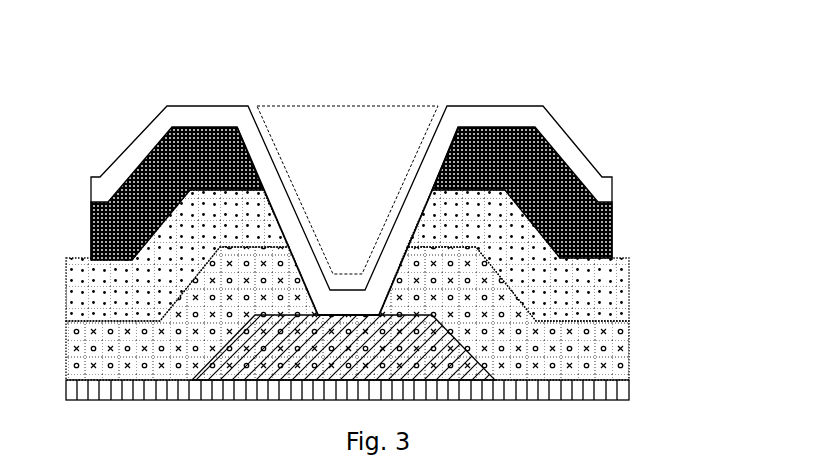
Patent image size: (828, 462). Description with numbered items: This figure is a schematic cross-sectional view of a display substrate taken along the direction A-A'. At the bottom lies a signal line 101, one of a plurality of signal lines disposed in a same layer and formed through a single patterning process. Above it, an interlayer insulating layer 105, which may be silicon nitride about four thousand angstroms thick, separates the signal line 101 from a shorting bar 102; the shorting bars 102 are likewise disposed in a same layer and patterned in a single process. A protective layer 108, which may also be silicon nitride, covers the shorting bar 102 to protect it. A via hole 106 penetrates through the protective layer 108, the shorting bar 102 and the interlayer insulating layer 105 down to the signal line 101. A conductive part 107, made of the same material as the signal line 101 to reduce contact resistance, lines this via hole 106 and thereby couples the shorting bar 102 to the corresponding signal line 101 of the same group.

The signal line 101 is at (482, 364).
The shorting bar 102 is at (632, 290).
The interlayer insulating layer 105 is at (632, 350).
The via hole 106 is at (362, 106).
The conductive part 107 is at (613, 197).
The protective layer 108 is at (613, 233).